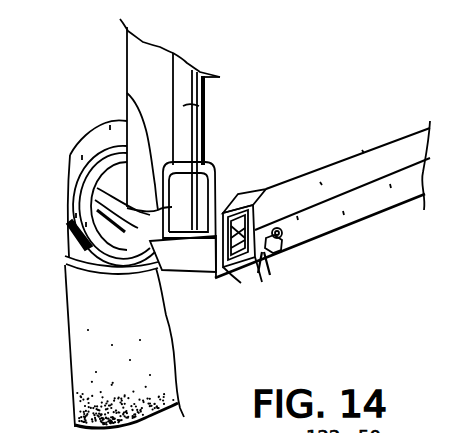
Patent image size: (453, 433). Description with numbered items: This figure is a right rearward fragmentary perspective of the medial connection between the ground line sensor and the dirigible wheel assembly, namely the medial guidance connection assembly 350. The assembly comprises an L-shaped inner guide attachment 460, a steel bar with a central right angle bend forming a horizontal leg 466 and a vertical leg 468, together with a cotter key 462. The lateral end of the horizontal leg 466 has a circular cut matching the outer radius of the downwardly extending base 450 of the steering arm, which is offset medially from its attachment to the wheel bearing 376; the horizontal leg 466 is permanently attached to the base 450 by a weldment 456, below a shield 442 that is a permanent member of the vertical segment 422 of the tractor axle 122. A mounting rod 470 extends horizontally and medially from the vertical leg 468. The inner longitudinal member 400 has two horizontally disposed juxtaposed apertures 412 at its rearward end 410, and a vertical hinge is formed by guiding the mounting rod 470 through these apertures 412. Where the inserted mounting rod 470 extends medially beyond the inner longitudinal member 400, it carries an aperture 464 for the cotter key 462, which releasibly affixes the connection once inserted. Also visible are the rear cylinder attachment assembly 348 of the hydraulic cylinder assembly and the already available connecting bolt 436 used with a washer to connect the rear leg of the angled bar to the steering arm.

The tractor axle 122 is at (218, 87).
The rear cylinder attachment assembly 348 is at (395, 432).
The medial guidance connection assembly 350 is at (372, 238).
The wheel bearing 376 is at (103, 129).
The inner longitudinal member 400 is at (377, 158).
The rearward end 410 is at (306, 178).
The apertures 412 is at (270, 203).
The vertical segment 422 is at (207, 115).
The connecting bolt 436 is at (422, 432).
The shield 442 is at (214, 188).
The base 450 is at (127, 92).
The weldment 456 is at (167, 330).
The inner guide attachment 460 is at (251, 260).
The cotter key 462 is at (268, 267).
The aperture 464 is at (257, 234).
The horizontal leg 466 is at (185, 278).
The vertical leg 468 is at (233, 268).
The mounting rod 470 is at (292, 240).